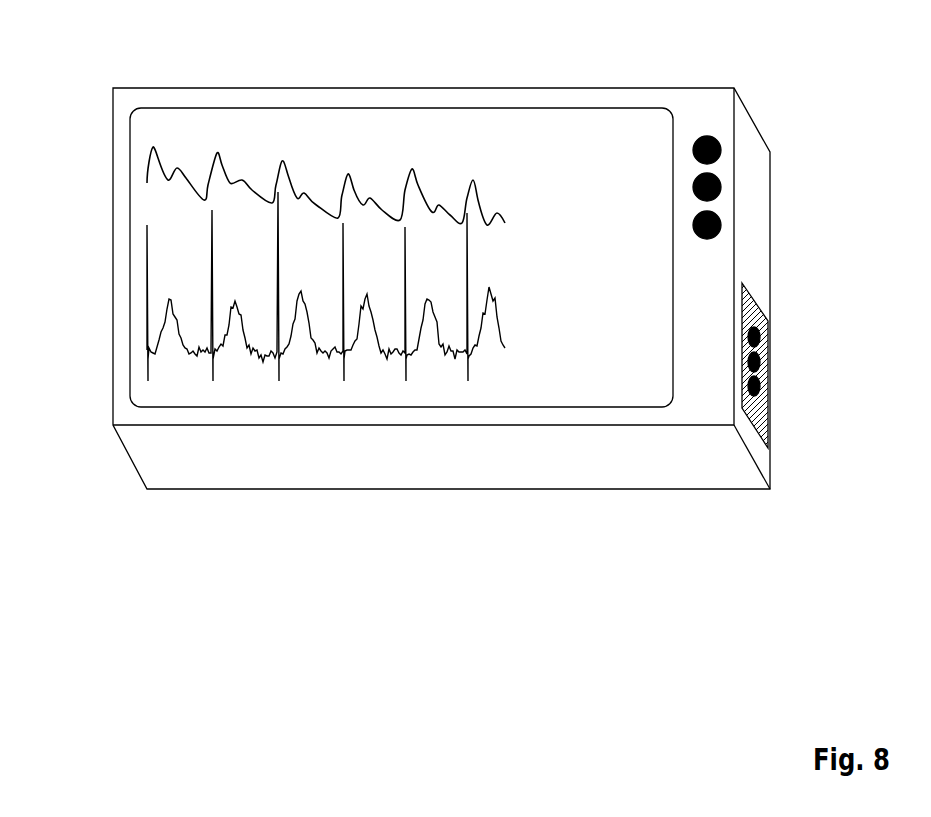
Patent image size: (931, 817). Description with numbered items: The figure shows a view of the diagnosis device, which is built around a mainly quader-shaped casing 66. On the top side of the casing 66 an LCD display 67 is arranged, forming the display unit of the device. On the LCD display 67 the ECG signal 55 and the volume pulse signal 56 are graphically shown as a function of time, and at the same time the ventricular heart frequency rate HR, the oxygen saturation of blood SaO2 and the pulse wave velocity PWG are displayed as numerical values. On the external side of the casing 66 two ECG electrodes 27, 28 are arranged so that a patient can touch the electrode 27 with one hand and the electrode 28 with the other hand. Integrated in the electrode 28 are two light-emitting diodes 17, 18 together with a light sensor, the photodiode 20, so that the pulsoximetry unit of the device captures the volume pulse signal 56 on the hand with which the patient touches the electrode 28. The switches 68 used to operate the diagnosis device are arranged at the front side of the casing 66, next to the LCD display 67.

The ECG electrode 27 is at (405, 359).
The casing 66 is at (430, 455).
The LCD display 67 is at (362, 140).
The volume pulse signal 56 is at (147, 165).
The ECG signal 55 is at (150, 355).
The switches 68 is at (718, 216).
The ECG electrode 28 is at (796, 379).
The photodiode 20 is at (760, 333).
The light-emitting diode 18 is at (760, 360).
The light-emitting diode 17 is at (760, 386).